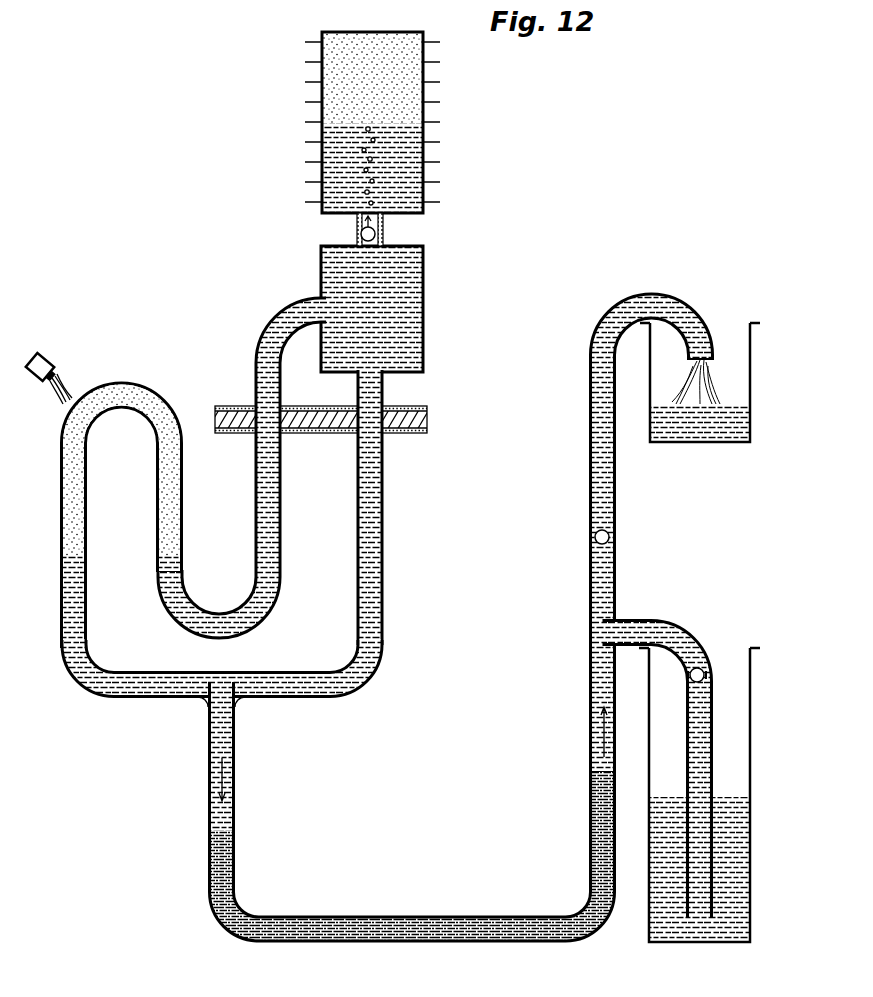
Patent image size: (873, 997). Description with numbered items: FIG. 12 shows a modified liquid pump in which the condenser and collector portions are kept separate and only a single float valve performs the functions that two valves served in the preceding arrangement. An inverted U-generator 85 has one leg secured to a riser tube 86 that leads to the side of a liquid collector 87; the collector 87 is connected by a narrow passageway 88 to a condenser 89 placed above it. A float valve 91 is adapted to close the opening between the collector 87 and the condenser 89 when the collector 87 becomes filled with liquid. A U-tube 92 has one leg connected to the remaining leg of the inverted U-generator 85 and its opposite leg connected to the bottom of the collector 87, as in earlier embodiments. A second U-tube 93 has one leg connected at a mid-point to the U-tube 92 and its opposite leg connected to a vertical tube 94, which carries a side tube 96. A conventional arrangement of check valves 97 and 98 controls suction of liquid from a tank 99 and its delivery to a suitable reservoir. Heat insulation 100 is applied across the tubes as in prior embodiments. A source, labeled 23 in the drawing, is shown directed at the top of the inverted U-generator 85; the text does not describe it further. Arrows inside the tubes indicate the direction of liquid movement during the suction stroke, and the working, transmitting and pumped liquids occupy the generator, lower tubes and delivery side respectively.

The gas inlet nozzle 23 is at (48, 356).
The inverted U-generator 85 is at (76, 492).
The riser tube 86 is at (257, 342).
The liquid collector 87 is at (424, 315).
The narrow passageway 88 is at (384, 236).
The condenser 89 is at (424, 143).
The float valve 91 is at (360, 233).
The U-tube 92 is at (306, 683).
The second U-tube 93 is at (490, 936).
The vertical tube 94 is at (592, 572).
The side tube 96 is at (648, 626).
The check valve 97 is at (596, 537).
The check valve 98 is at (713, 672).
The tank 99 is at (750, 916).
The heat insulation 100 is at (412, 433).